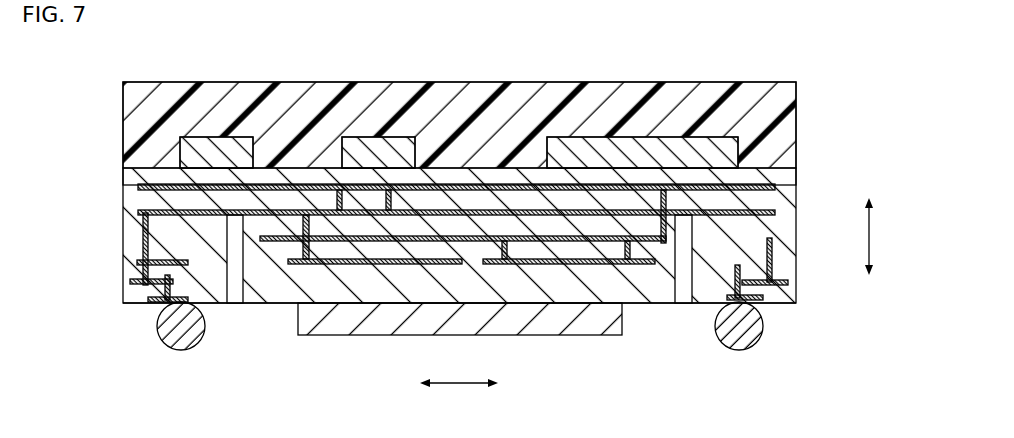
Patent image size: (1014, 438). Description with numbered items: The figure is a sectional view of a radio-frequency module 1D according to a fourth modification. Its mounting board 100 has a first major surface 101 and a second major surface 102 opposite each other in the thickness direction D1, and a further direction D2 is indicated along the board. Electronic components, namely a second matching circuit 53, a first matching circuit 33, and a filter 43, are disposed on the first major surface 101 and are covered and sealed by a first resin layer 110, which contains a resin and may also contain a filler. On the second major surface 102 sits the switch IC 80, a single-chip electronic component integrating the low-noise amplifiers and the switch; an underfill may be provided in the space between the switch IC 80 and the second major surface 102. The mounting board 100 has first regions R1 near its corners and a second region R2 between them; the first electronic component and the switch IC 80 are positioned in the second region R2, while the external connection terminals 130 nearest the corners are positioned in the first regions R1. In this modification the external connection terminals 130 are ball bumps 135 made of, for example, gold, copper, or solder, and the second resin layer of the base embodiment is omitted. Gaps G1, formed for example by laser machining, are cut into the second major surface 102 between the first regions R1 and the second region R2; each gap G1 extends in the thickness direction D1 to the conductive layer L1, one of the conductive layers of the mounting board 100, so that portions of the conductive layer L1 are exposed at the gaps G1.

The radio-frequency module 1D is at (790, 62).
The first resin layer 110 is at (785, 99).
The second matching circuit 53 is at (214, 146).
The first matching circuit 33 is at (374, 146).
The filter 43 is at (640, 150).
The first major surface 101 is at (486, 163).
The mounting board 100 is at (786, 203).
The second major surface 102 is at (778, 304).
The gap G1 is at (237, 268).
The conductive layer L1 is at (191, 215).
The first region R1 is at (130, 292).
The second region R2 is at (487, 283).
The switch IC 80 is at (585, 327).
The ball bump 135 is at (181, 324).
The external connection terminal 130 is at (460, 356).
The thickness direction D1 is at (860, 236).
The width direction D2 is at (459, 373).